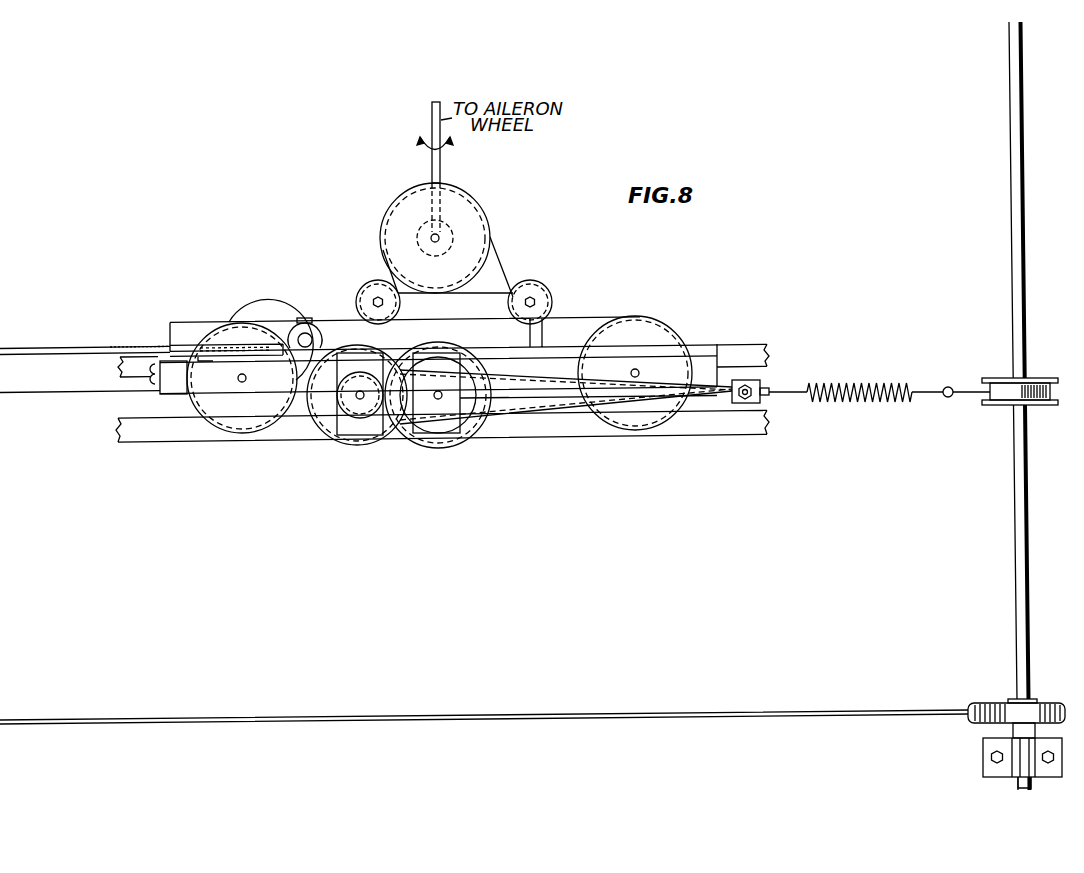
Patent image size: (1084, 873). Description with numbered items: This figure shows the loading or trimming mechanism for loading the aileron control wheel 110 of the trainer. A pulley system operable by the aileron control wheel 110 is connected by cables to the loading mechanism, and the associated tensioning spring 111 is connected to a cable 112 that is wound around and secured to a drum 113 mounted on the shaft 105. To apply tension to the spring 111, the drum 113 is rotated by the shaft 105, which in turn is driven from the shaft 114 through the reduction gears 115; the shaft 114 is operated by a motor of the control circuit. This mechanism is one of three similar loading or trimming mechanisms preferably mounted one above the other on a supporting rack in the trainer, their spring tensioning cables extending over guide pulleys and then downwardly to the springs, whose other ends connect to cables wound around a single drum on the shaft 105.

The shaft 105 is at (1016, 491).
The aileron control wheel 110 is at (431, 108).
The tensioning spring 111 is at (850, 383).
The cable 112 is at (967, 389).
The drum 113 is at (1002, 400).
The shaft 114 is at (723, 714).
The reduction gears 115 is at (1003, 703).